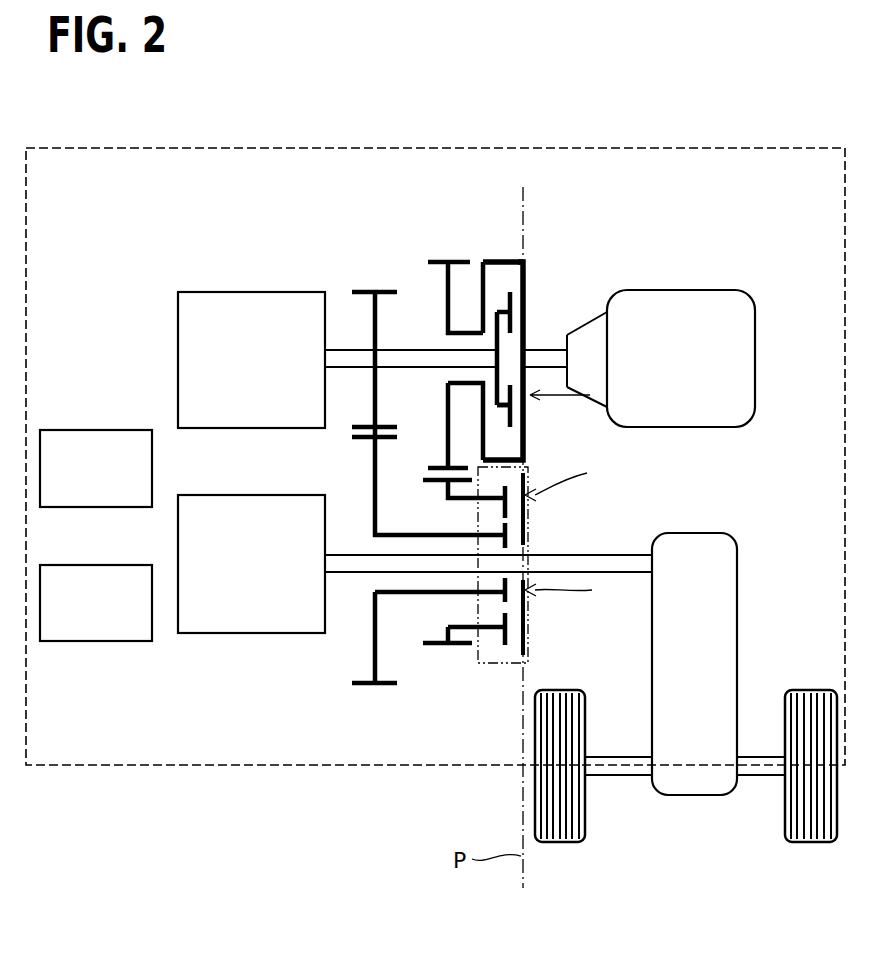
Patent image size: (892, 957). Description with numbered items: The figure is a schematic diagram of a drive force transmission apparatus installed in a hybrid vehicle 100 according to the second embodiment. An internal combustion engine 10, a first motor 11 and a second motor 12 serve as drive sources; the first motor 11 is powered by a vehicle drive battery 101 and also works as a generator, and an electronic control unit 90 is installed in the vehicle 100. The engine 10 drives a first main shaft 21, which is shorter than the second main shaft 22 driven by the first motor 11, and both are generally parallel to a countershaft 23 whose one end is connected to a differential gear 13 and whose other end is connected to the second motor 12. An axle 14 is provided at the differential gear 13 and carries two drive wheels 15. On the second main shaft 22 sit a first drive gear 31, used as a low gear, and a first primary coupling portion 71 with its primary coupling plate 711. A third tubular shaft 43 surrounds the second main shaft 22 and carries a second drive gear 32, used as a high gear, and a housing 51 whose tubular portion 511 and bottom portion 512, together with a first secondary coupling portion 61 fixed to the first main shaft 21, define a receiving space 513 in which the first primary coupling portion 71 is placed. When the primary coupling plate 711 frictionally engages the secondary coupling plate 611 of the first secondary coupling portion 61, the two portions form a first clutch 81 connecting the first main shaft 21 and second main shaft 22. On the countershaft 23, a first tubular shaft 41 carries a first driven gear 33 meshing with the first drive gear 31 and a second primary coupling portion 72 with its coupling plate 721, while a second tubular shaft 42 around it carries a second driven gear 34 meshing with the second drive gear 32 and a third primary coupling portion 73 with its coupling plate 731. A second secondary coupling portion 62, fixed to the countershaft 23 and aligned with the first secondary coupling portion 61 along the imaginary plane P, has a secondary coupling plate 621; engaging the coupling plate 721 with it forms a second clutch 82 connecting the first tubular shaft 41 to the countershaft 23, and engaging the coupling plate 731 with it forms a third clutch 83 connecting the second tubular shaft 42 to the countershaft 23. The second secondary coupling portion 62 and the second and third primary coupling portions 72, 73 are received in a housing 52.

The vehicle 100 is at (345, 147).
The internal combustion engine 10 is at (684, 297).
The first motor 11 is at (185, 330).
The second motor 12 is at (185, 534).
The differential gear 13 is at (733, 583).
The axle 14 is at (632, 778).
The drive wheels 15 is at (555, 844).
The first main shaft 21 is at (533, 350).
The second main shaft 22 is at (356, 348).
The countershaft 23 is at (619, 556).
The first drive gear 31 is at (374, 288).
The second drive gear 32 is at (433, 258).
The first driven gear 33 is at (372, 687).
The second driven gear 34 is at (455, 648).
The first tubular shaft 41 is at (402, 533).
The second tubular shaft 42 is at (463, 466).
The third tubular shaft 43 is at (467, 332).
The housing 51 is at (500, 256).
The tubular portion 511 is at (511, 256).
The bottom portion 512 is at (477, 285).
The receiving space 513 is at (507, 280).
The housing 52 is at (502, 670).
The first secondary coupling portion 61 is at (527, 274).
The secondary coupling plate 611 is at (527, 299).
The second secondary coupling portion 62 is at (527, 641).
The secondary coupling plate 621 is at (527, 538).
The first primary coupling portion 71 is at (517, 389).
The primary coupling plate 711 is at (515, 411).
The second primary coupling portion 72 is at (498, 600).
The coupling plate 721 is at (503, 600).
The third primary coupling portion 73 is at (500, 507).
The coupling plate 731 is at (505, 508).
The first clutch 81 is at (605, 397).
The second clutch 82 is at (573, 590).
The third clutch 83 is at (571, 483).
The electronic control unit 90 is at (88, 643).
The vehicle drive battery 101 is at (92, 431).